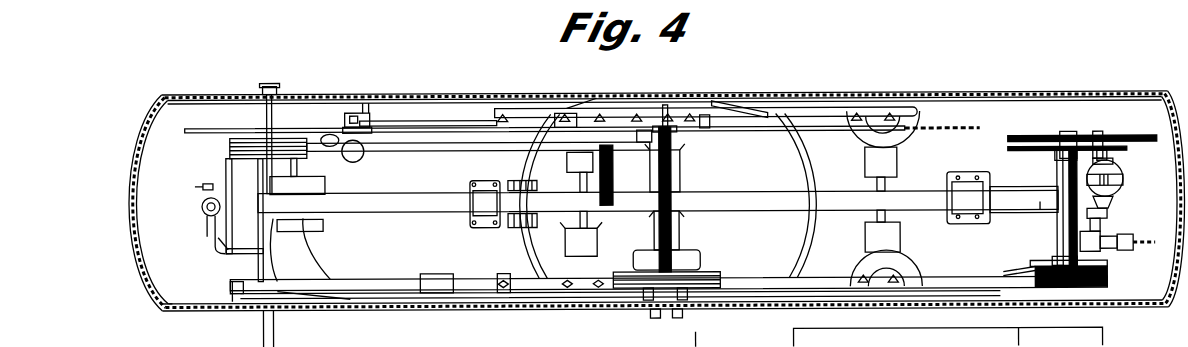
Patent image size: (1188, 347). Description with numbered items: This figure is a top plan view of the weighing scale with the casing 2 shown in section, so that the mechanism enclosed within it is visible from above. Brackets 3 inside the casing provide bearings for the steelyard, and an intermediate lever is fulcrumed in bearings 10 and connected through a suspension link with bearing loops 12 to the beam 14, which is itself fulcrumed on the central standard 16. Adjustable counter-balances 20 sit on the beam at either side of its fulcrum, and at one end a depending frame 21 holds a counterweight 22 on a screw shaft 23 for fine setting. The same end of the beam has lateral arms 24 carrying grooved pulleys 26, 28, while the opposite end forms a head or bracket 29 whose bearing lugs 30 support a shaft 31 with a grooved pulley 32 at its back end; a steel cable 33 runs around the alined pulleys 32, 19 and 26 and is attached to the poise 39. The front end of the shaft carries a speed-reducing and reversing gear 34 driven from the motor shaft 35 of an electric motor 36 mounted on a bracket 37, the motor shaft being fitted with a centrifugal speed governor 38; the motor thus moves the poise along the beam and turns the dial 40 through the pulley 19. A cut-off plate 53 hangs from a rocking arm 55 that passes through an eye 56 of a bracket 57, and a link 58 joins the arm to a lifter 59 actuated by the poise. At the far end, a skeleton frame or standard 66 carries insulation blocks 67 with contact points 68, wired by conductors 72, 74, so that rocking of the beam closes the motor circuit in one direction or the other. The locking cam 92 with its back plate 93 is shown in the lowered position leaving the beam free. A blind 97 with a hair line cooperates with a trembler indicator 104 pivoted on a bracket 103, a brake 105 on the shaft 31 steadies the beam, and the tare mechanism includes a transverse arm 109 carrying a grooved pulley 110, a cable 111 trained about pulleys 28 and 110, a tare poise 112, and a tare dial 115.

The casing 2 is at (252, 313).
The brackets 3 is at (577, 240).
The bearings 10 is at (907, 257).
The bearing eyes or loops 12 is at (510, 174).
The beam 14 is at (407, 211).
The standard 16 is at (697, 245).
The grooved wheel or pulley 19 is at (700, 287).
The adjustable counter-balances 20 is at (463, 183).
The depending frame 21 is at (1110, 252).
The counterweight 22 is at (1103, 237).
The screw shaft 23 is at (1150, 240).
The lateral arms 24 is at (283, 252).
The grooved pulley 26 is at (227, 262).
The grooved pulley 28 is at (290, 137).
The head or bracket 29 is at (1047, 180).
The bearing lugs 30 is at (1057, 156).
The shaft 31 is at (1040, 203).
The grooved pulley 32 is at (1088, 289).
The steel cable 33 is at (775, 272).
The speed-reducing and reversing gear 34 is at (1082, 137).
The motor shaft 35 is at (1110, 164).
The electric motor 36 is at (1124, 187).
The bracket 37 is at (1124, 174).
The centrifugal speed governor 38 is at (1115, 208).
The poise 39 is at (430, 273).
The dial 40 is at (430, 93).
The cut-off plate 53 is at (723, 107).
The rocking arm 55 is at (678, 180).
The eye 56 is at (682, 172).
The bracket 57 is at (672, 233).
The link 58 is at (700, 260).
The lifter 59 is at (1003, 273).
The frame or standard 66 is at (226, 176).
The blocks of insulation 67 is at (188, 185).
The contact points 68 is at (207, 220).
The conductor 72 is at (160, 306).
The conductor 74 is at (218, 244).
The quadrantal bracket or locking cam 92 is at (328, 182).
The back plate 93 is at (323, 226).
The blind or screen 97 is at (372, 118).
The bracket 103 is at (372, 138).
The trembler finger or indicator 104 is at (352, 123).
The brake 105 is at (1067, 289).
The transverse arm 109 is at (614, 173).
The grooved pulley 110 is at (562, 113).
The cable 111 is at (457, 143).
The tare poise 112 is at (372, 114).
The tare dial 115 is at (210, 128).